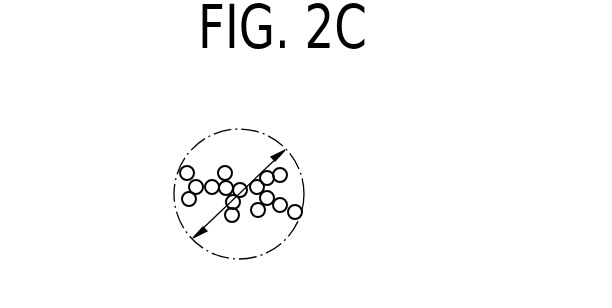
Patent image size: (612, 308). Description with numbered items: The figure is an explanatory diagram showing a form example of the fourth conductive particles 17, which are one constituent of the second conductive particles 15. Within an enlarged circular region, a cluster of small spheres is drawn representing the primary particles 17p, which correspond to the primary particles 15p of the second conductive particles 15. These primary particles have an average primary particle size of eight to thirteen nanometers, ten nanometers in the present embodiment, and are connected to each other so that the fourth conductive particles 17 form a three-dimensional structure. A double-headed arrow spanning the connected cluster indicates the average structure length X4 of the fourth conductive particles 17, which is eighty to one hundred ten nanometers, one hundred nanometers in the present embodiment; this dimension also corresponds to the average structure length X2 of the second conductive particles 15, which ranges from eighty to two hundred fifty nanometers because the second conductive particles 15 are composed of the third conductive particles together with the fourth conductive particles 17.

The fourth conductive particles 17 is at (328, 192).
The second conductive particles 15 is at (300, 173).
The primary particles 17p is at (178, 211).
The primary particles 15p is at (174, 184).
The average structure length X4 is at (241, 154).
The average structure length X2 is at (250, 182).